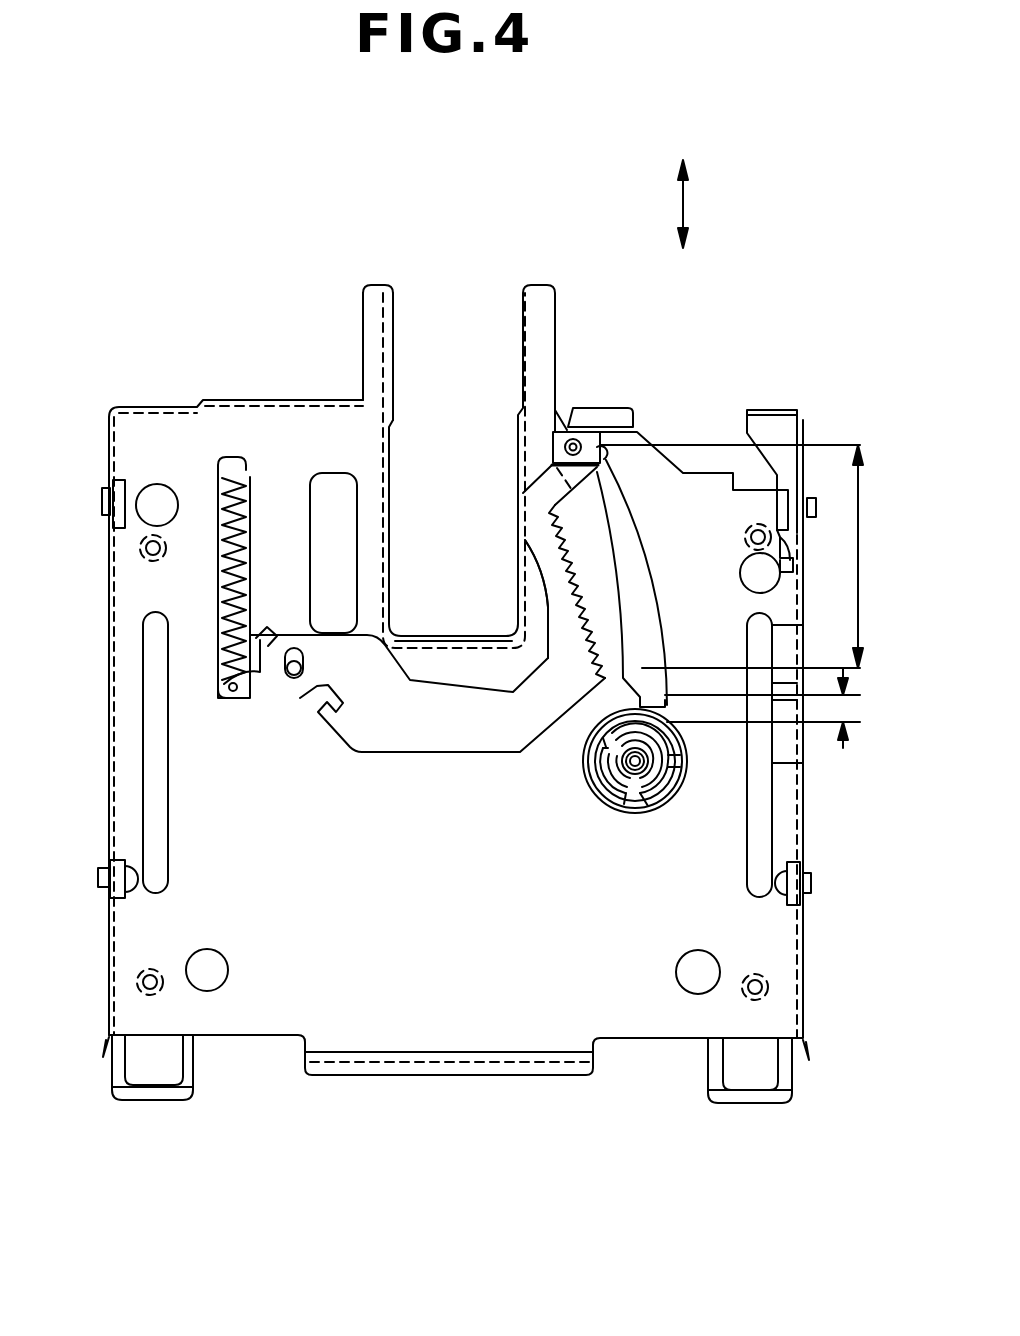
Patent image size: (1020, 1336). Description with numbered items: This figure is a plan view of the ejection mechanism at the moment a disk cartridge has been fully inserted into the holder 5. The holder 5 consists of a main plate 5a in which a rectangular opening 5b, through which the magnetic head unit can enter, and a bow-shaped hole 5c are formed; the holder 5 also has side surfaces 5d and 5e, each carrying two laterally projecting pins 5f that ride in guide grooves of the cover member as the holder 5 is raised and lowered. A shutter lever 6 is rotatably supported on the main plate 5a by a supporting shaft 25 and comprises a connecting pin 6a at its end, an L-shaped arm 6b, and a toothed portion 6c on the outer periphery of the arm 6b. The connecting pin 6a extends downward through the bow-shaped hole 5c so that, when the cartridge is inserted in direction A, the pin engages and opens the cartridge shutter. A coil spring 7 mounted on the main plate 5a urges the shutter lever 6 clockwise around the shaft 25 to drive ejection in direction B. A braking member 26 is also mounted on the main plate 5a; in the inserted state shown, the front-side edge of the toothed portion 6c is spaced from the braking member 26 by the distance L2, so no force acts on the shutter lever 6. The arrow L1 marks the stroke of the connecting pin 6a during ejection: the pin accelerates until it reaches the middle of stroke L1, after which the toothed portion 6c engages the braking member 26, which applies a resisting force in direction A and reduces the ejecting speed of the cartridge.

The holder 5 is at (260, 1055).
The main plate 5a is at (456, 1040).
The rectangular opening 5b is at (390, 470).
The bow-shaped hole 5c is at (636, 540).
The side surface 5d is at (110, 690).
The side surface 5e is at (805, 815).
The laterally projecting pins 5f is at (105, 505).
The shutter lever 6 is at (447, 732).
The connecting pin 6a is at (566, 418).
The L-shaped arm 6b is at (566, 598).
The toothed portion 6c is at (614, 598).
The coil spring 7 is at (230, 585).
The supporting shaft 25 is at (293, 678).
The braking member 26 is at (627, 818).
The stroke of the connecting pin L1 is at (772, 556).
The distance between toothed portion and braking member L2 is at (779, 708).
The insertion direction A is at (681, 182).
The ejecting direction B is at (682, 261).